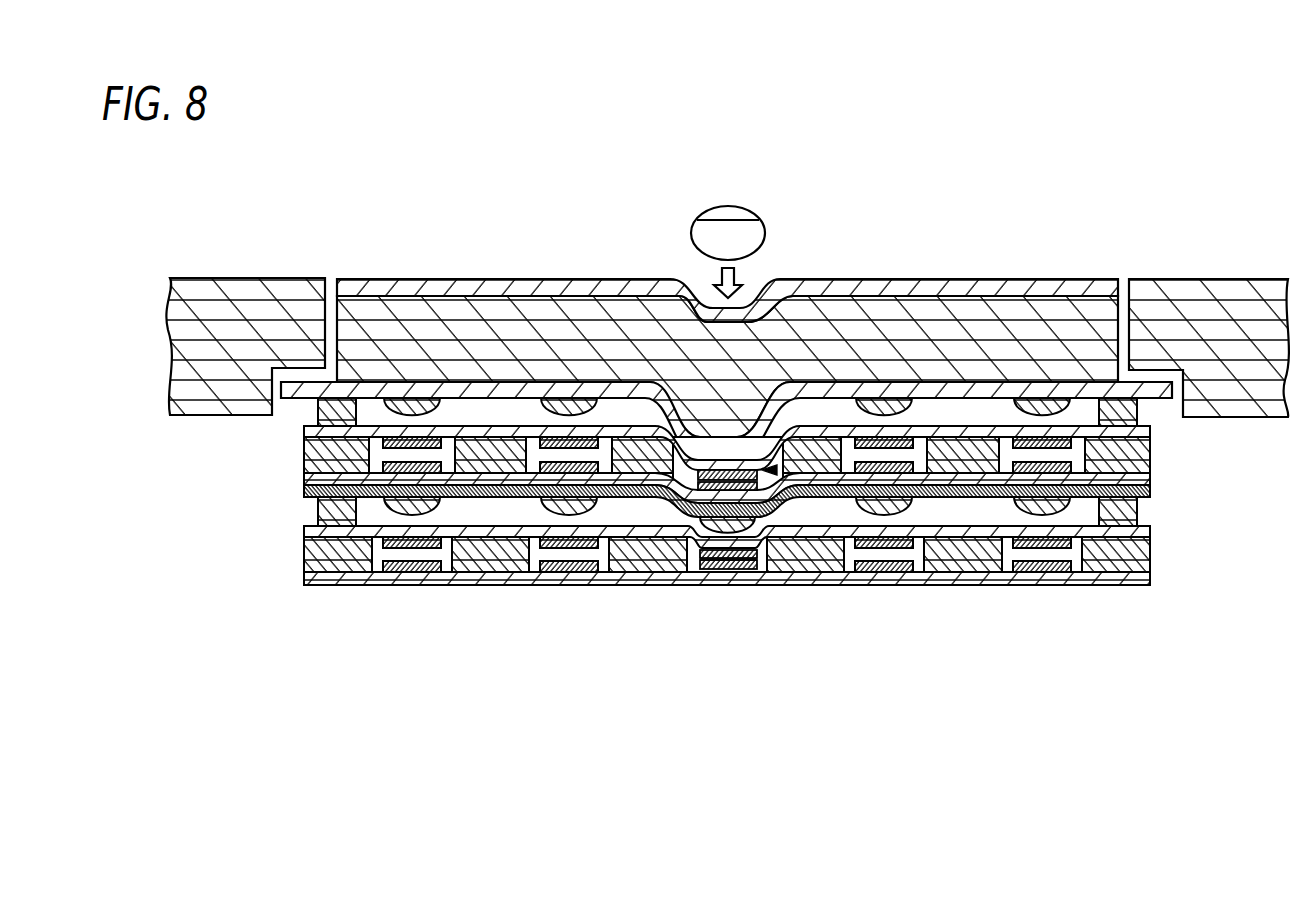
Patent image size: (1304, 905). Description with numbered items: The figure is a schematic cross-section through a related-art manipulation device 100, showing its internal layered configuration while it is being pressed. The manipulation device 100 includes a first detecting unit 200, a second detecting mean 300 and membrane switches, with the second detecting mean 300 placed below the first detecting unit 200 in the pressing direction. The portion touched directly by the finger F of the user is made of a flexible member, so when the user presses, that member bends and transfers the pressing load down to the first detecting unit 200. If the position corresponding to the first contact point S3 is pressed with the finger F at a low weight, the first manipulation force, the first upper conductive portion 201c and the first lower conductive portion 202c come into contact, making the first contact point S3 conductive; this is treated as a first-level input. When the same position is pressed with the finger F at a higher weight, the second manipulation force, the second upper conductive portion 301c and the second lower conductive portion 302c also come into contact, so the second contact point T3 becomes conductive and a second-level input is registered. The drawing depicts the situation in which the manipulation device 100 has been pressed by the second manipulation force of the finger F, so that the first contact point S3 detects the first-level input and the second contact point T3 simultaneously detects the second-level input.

The manipulation device 100 is at (565, 260).
The first detecting unit 200 is at (691, 436).
The second detecting mean 300 is at (691, 589).
The first upper conductive portion 201c is at (670, 458).
The first lower conductive portion 202c is at (680, 492).
The second upper conductive portion 301c is at (710, 567).
The second lower conductive portion 302c is at (743, 569).
The first contact point S3 is at (806, 464).
The second contact point T3 is at (770, 566).
The finger F is at (763, 220).